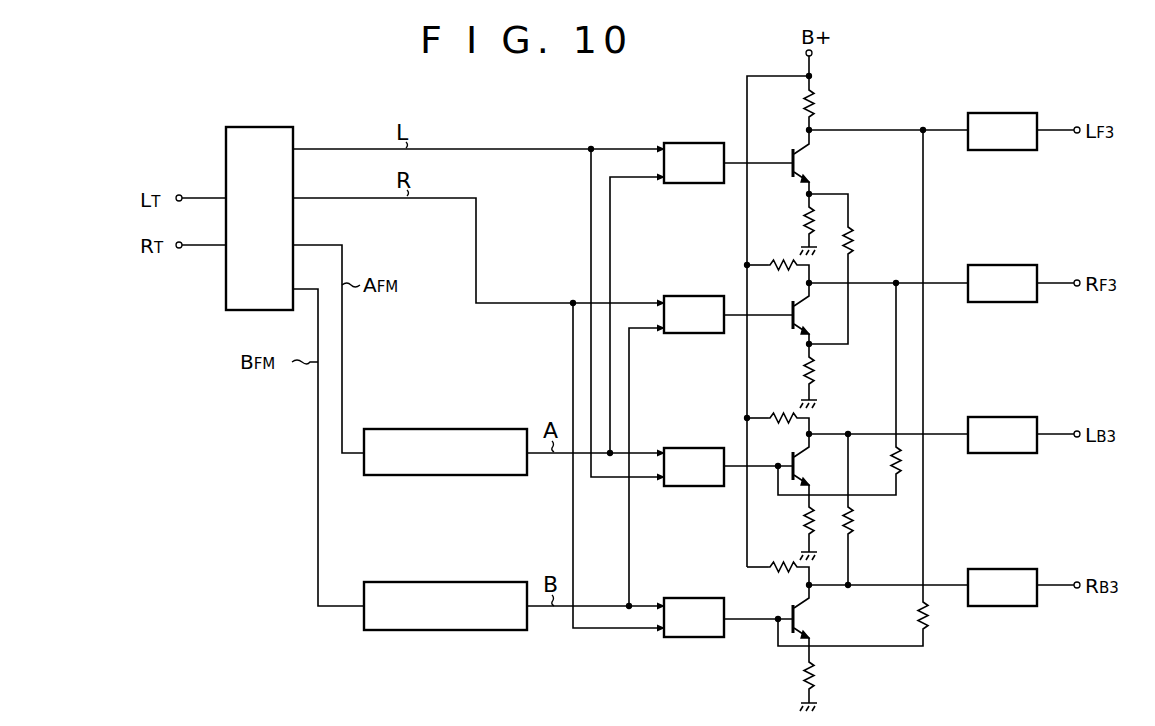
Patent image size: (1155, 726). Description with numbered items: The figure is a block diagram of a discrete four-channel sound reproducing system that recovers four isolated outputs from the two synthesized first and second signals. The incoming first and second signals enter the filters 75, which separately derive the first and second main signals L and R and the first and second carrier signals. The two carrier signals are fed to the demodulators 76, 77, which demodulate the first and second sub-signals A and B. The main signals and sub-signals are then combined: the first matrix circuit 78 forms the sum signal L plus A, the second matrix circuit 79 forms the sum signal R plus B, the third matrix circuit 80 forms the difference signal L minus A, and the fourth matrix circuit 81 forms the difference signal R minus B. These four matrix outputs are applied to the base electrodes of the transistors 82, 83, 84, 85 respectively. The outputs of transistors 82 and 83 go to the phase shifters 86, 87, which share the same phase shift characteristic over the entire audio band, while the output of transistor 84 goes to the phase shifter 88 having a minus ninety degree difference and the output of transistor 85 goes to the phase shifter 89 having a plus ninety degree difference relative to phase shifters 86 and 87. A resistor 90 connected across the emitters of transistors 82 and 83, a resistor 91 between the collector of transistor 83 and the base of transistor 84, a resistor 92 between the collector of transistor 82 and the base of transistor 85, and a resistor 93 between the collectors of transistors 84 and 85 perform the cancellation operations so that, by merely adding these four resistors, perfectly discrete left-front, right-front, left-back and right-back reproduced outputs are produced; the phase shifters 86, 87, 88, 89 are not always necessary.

The filters 75 is at (284, 128).
The demodulator 76 is at (503, 430).
The demodulator 77 is at (503, 583).
The first matrix circuit 78 is at (712, 183).
The second matrix circuit 79 is at (712, 333).
The third matrix circuit 80 is at (712, 486).
The fourth matrix circuit 81 is at (712, 637).
The transistor 82 is at (800, 179).
The transistor 83 is at (796, 334).
The transistor 84 is at (799, 498).
The transistor 85 is at (800, 644).
The phase shifter 86 is at (1017, 150).
The phase shifter 87 is at (1017, 302).
The phase shifter 88 is at (1017, 453).
The phase shifter 89 is at (1017, 606).
The resistor 90 is at (856, 240).
The resistor 91 is at (894, 466).
The resistor 92 is at (916, 622).
The resistor 93 is at (852, 528).